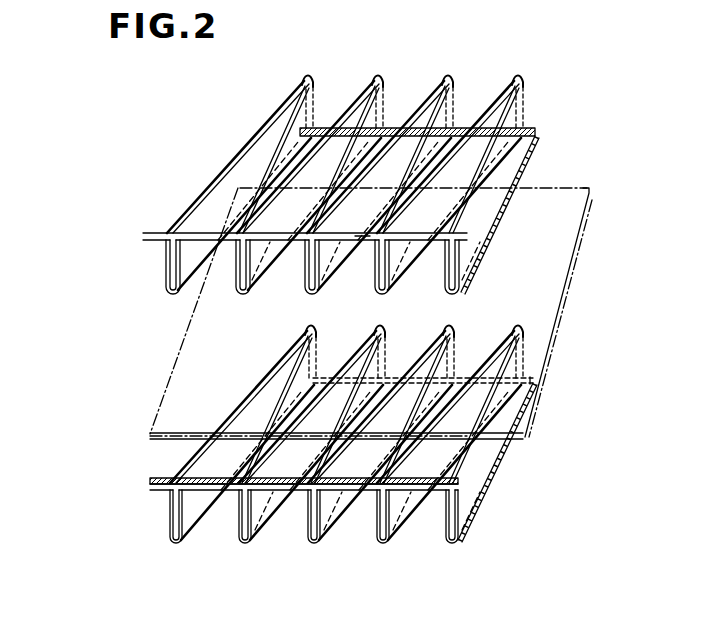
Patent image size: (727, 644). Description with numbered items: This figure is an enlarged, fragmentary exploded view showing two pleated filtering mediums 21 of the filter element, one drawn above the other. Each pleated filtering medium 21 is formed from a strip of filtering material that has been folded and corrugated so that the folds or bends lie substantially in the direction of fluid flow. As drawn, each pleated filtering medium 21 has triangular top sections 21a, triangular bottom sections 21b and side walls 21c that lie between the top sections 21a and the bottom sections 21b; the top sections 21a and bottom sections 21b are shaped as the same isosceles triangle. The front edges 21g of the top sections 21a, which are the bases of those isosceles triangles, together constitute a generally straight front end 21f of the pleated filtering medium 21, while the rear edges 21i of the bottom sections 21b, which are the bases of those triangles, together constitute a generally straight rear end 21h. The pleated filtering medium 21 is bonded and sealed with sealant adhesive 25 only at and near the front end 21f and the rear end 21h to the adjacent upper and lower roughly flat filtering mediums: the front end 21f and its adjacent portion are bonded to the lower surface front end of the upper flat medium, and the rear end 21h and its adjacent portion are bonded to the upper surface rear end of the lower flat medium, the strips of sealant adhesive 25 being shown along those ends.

The pleated filtering medium 21 is at (220, 152).
The triangular top section 21a is at (280, 125).
The triangular bottom section 21b is at (316, 122).
The side wall 21c is at (413, 128).
The front end 21f is at (361, 252).
The front edge 21g is at (470, 252).
The rear end 21h is at (512, 150).
The rear edge 21i is at (456, 128).
The sealant adhesive 25 is at (529, 127).